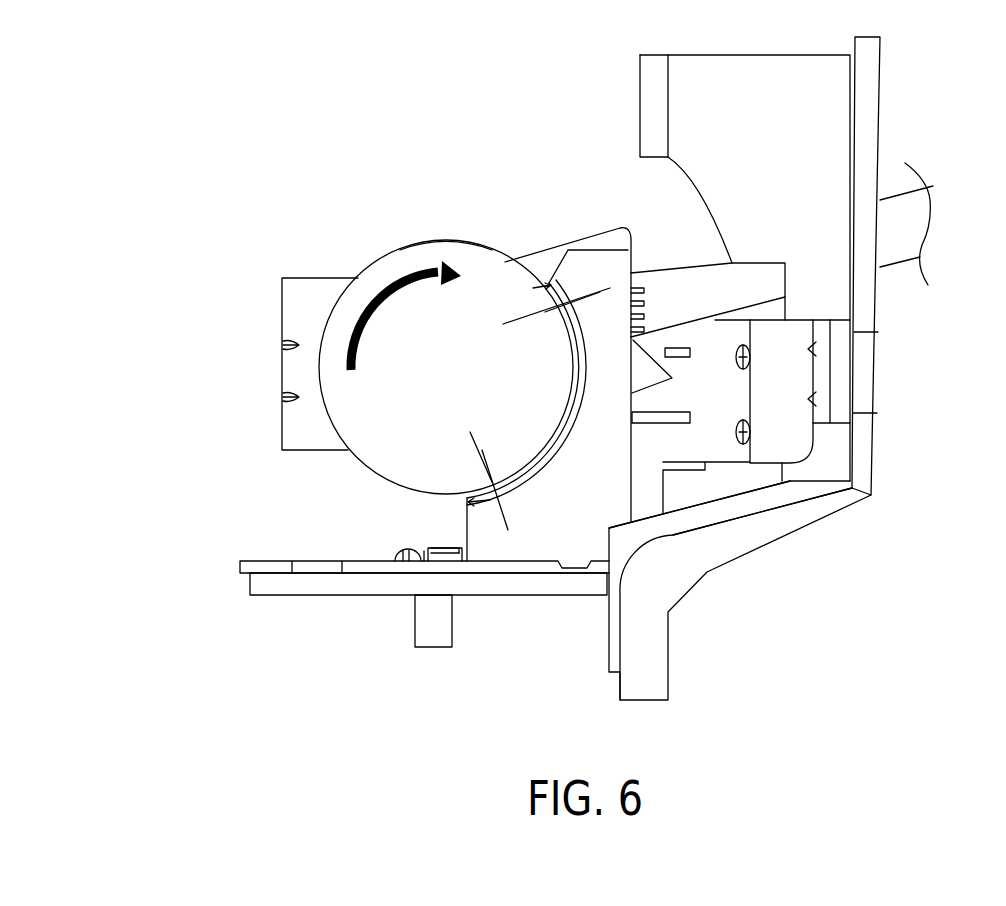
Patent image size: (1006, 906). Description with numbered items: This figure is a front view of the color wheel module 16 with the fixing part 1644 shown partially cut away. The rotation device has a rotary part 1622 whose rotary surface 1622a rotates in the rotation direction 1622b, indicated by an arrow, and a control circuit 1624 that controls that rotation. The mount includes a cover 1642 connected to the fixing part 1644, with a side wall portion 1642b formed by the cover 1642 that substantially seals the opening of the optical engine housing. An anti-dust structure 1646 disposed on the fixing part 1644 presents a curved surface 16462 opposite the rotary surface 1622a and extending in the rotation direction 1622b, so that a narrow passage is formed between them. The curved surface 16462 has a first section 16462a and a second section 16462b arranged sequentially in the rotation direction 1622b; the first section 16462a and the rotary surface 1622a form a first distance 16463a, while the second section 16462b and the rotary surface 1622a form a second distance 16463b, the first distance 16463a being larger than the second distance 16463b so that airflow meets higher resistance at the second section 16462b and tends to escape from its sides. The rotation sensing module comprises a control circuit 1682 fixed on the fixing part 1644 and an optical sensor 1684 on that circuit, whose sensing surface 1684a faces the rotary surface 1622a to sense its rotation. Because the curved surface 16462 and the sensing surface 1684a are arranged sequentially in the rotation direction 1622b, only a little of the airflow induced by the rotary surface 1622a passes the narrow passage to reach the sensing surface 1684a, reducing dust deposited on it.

The color wheel module 16 is at (238, 146).
The rotary part 1622 is at (395, 262).
The rotary surface 1622a is at (439, 232).
The rotation direction 1622b is at (380, 288).
The control circuit 1624 is at (650, 380).
The cover 1642 is at (700, 65).
The side wall portion 1642b is at (870, 90).
The fixing part 1644 is at (262, 565).
The anti-dust structure 1646 is at (550, 553).
The curved surface 16462 is at (549, 282).
The first section 16462a is at (588, 314).
The second section 16462b is at (529, 470).
The first distance 16463a is at (544, 329).
The second distance 16463b is at (513, 465).
The control circuit 1682 is at (333, 587).
The optical sensor 1684 is at (447, 562).
The sensing surface 1684a is at (431, 541).